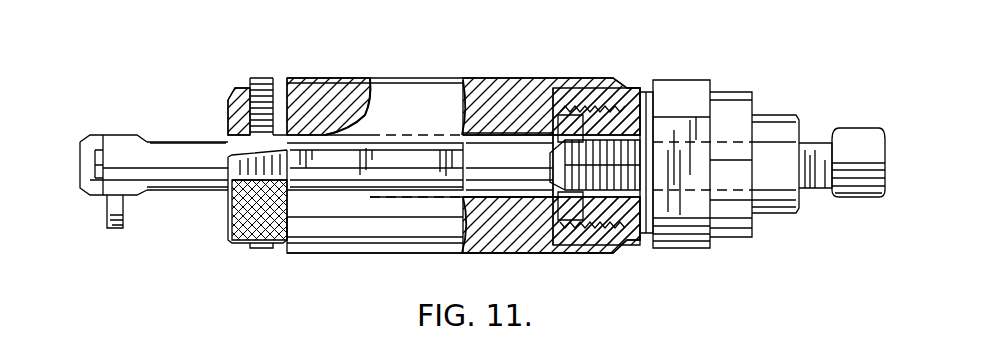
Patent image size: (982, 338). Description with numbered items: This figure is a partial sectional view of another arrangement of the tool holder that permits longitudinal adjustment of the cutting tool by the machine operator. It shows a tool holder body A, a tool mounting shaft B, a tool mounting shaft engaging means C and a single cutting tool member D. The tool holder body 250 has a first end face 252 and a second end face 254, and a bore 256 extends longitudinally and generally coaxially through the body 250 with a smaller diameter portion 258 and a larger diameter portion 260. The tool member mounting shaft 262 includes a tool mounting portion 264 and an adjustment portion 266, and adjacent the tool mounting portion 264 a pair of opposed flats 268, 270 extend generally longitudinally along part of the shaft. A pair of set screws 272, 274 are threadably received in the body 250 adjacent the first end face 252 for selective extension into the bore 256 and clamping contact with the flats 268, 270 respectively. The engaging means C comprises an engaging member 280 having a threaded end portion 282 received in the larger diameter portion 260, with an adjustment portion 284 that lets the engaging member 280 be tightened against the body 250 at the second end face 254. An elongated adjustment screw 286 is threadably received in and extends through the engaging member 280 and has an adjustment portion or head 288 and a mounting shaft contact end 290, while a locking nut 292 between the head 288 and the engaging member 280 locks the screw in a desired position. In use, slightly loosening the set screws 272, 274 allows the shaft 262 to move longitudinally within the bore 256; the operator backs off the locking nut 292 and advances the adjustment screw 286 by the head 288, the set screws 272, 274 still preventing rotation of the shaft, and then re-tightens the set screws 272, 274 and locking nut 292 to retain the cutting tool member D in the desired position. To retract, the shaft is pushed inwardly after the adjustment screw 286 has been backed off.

The tool holder body 250 is at (497, 82).
The first end face 252 is at (227, 100).
The second end face 254 is at (627, 88).
The bore 256 is at (473, 200).
The smaller diameter portion 258 is at (302, 130).
The larger diameter portion 260 is at (558, 125).
The tool member mounting shaft 262 is at (173, 172).
The tool mounting portion 264 is at (115, 133).
The adjustment portion 266 is at (575, 165).
The flat 268 is at (213, 138).
The flat 270 is at (147, 197).
The set screw 272 is at (258, 80).
The set screw 274 is at (262, 245).
The engaging member 280 is at (724, 230).
The threaded end portion 282 is at (622, 220).
The adjustment portion 284 is at (688, 95).
The adjustment screw 286 is at (805, 152).
The adjustment portion or head 288 is at (852, 190).
The mounting shaft contact end 290 is at (555, 213).
The locking nut 292 is at (772, 205).
The tool holder body A is at (433, 72).
The tool mounting shaft B is at (143, 117).
The tool mounting shaft engaging means C is at (744, 78).
The cutting tool member D is at (112, 233).